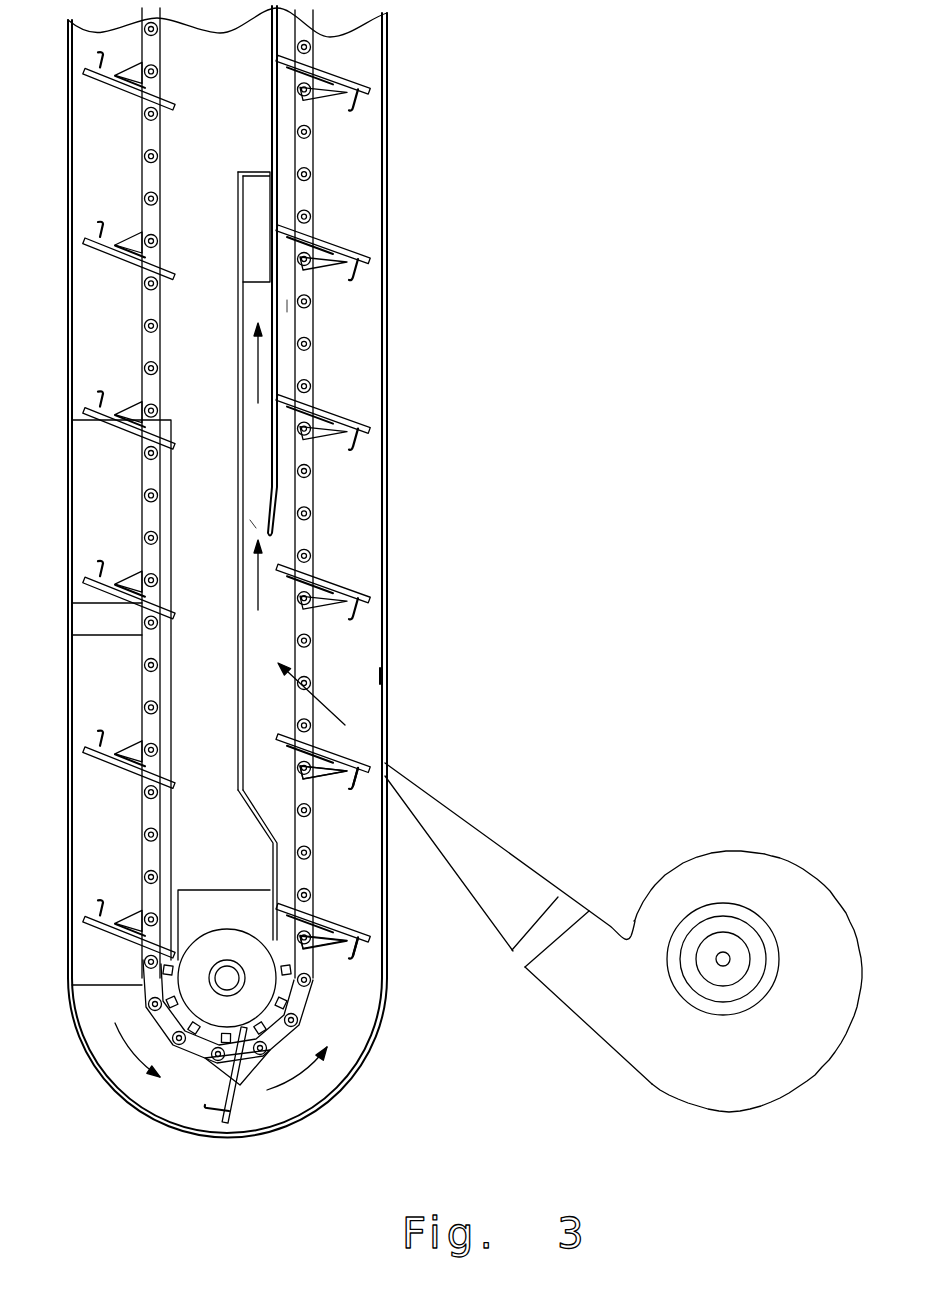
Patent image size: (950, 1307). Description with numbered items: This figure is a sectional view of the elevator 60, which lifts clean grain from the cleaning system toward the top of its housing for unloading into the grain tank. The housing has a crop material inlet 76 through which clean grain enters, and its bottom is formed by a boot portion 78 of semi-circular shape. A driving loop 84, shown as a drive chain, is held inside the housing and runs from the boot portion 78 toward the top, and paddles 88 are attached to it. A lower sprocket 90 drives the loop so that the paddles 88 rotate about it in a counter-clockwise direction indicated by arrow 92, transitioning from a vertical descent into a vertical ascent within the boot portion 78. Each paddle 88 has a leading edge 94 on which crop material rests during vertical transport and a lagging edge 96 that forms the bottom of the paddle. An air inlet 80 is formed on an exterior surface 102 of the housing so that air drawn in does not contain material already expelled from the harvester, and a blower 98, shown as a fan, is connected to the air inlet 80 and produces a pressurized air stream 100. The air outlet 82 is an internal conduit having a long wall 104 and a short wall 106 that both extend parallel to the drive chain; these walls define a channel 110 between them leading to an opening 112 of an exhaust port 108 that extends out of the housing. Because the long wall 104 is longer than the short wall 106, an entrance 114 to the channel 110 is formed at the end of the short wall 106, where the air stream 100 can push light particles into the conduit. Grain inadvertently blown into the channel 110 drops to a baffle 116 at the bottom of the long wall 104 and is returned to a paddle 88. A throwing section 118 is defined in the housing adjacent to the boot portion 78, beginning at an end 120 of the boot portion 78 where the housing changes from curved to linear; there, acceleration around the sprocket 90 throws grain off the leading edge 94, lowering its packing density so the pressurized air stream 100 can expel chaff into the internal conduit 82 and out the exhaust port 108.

The elevator 60 is at (565, 230).
The crop material inlet 76 is at (107, 810).
The boot portion 78 is at (293, 1127).
The air inlet 80 is at (374, 761).
The air outlet 82 is at (282, 549).
The driving loop 84 is at (307, 493).
The paddles 88 is at (176, 106).
The sprocket 90 is at (233, 993).
The arrow 92 is at (123, 1050).
The leading edge 94 is at (340, 770).
The lagging edge 96 is at (350, 772).
The blower 98 is at (765, 854).
The pressurized air stream 100 is at (258, 360).
The exterior surface 102 is at (388, 731).
The long wall 104 is at (237, 488).
The short wall 106 is at (287, 305).
The exhaust port 108 is at (273, 202).
The channel 110 is at (255, 312).
The opening 112 is at (242, 268).
The entrance 114 is at (255, 533).
The baffle 116 is at (255, 820).
The throwing section 118 is at (382, 676).
The end of the boot portion 120 is at (386, 987).